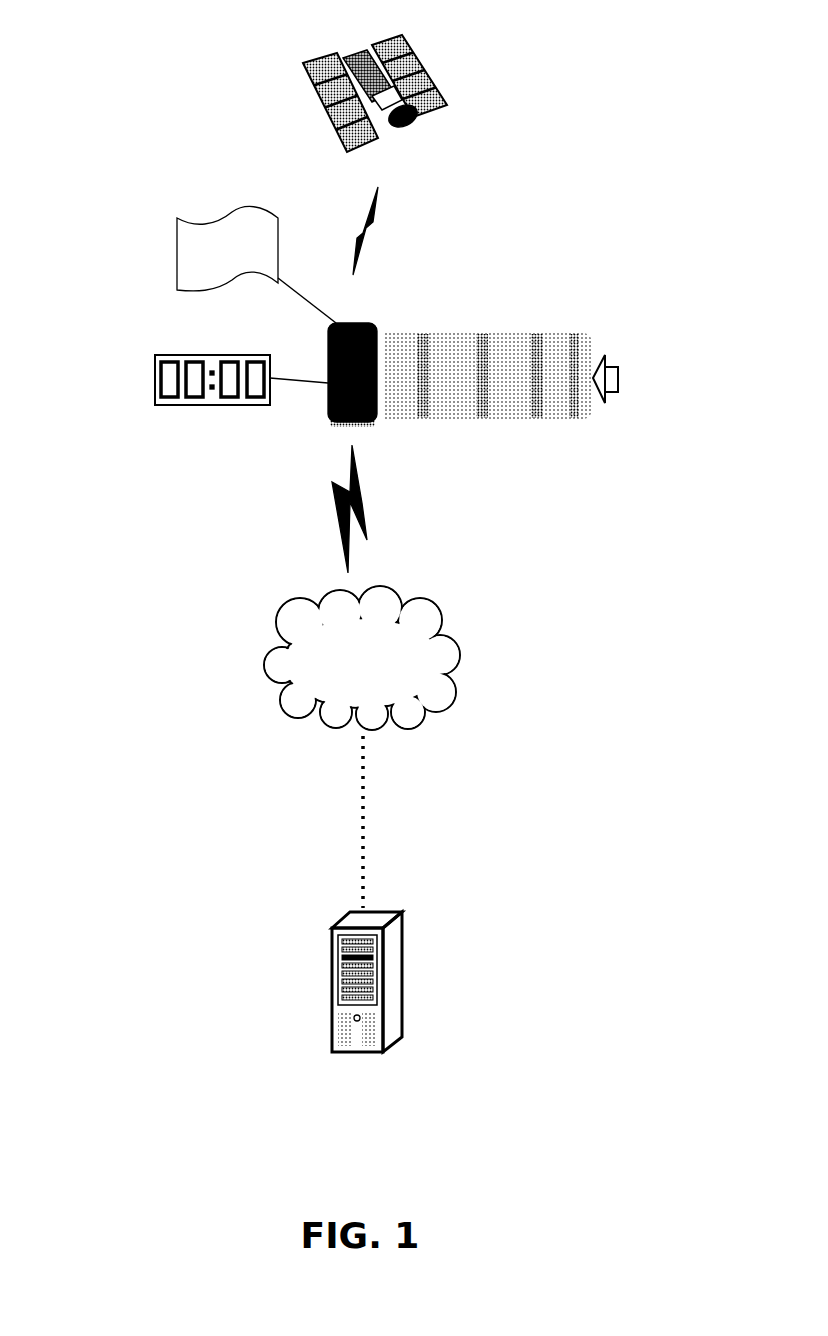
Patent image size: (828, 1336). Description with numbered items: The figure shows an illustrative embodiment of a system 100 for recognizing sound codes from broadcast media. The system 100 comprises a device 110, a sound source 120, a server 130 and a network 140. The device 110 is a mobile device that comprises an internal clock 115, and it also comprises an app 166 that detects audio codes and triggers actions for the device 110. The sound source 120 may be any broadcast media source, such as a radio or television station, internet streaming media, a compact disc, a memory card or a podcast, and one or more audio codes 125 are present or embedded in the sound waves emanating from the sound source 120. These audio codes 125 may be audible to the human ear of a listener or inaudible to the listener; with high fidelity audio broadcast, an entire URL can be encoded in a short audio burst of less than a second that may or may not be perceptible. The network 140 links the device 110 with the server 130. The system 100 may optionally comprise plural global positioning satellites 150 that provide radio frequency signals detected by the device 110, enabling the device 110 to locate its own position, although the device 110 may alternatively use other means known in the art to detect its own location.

The system 100 is at (344, 1208).
The device 110 is at (377, 321).
The internal clock 115 is at (155, 368).
The sound source 120 is at (620, 365).
The audio codes 125 is at (500, 327).
The server 130 is at (372, 907).
The network 140 is at (343, 692).
The global positioning satellites 150 is at (398, 52).
The app 166 is at (238, 265).